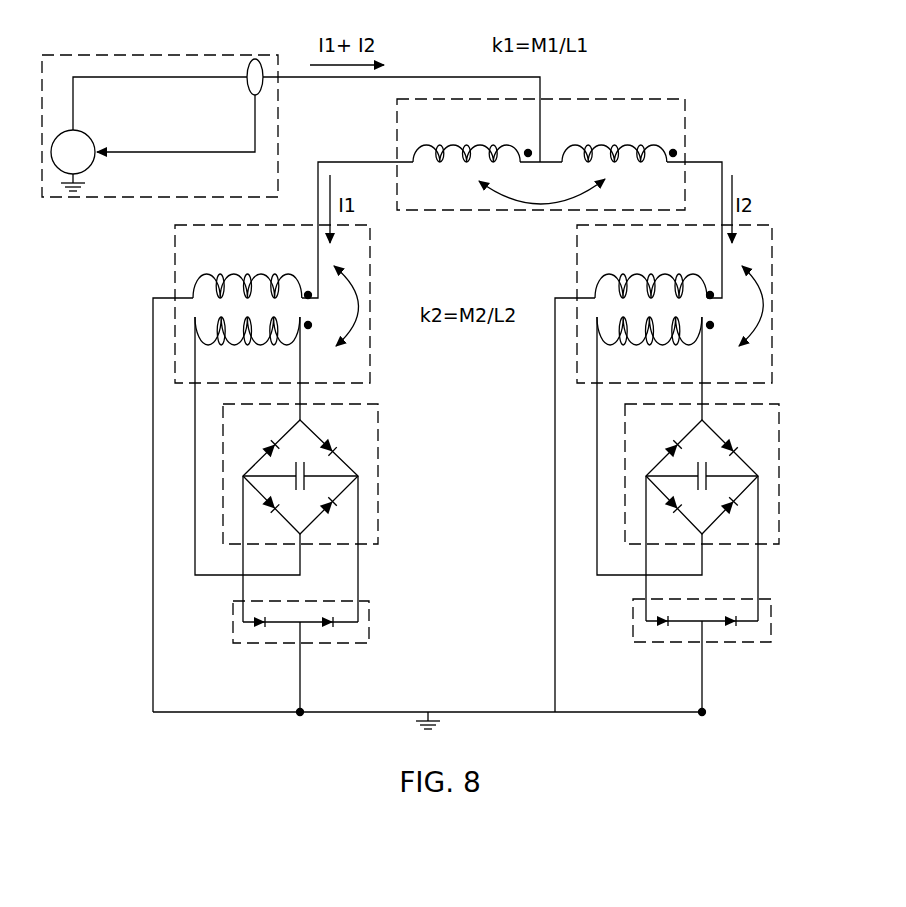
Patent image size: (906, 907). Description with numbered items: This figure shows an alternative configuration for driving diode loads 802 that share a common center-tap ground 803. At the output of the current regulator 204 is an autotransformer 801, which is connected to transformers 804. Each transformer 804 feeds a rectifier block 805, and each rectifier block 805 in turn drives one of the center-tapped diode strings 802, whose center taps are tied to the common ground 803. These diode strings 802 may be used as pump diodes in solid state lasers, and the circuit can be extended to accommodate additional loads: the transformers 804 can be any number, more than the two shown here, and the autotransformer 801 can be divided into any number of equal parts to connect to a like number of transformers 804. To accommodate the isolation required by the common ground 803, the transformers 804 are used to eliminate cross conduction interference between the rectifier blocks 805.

The current regulator 204 is at (189, 55).
The autotransformer 801 is at (638, 99).
The transformers 804 is at (577, 268).
The rectifier blocks 805 is at (625, 445).
The diode loads 802 is at (633, 618).
The common center-tap ground 803 is at (450, 712).